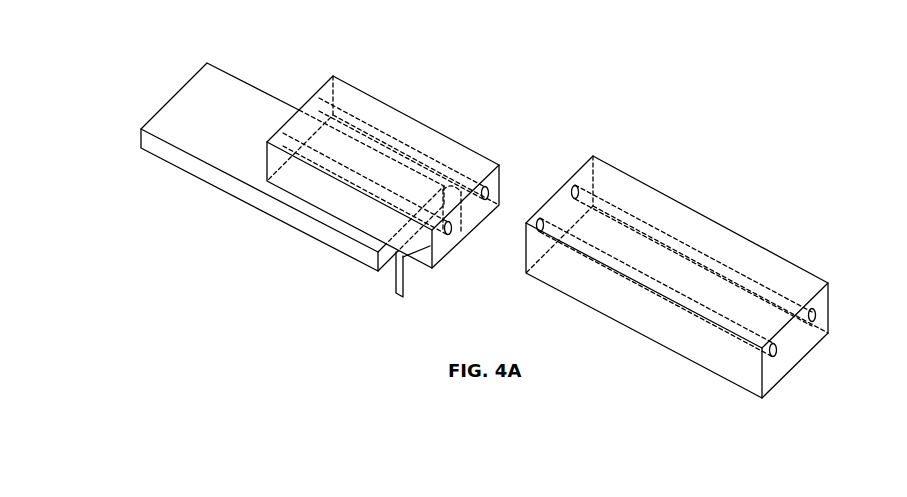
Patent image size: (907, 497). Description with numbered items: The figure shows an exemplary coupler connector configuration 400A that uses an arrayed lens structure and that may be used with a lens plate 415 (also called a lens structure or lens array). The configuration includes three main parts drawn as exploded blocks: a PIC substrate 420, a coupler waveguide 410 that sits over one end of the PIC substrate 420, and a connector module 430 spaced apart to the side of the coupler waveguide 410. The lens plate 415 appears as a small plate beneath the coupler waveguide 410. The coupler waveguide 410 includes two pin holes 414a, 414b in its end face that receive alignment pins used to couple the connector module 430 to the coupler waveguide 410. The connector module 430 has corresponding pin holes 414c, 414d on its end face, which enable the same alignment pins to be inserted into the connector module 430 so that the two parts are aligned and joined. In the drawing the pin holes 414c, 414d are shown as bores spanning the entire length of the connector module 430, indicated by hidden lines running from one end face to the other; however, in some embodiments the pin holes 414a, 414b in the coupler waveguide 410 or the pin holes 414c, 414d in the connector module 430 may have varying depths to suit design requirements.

The coupler connector configuration 400A is at (626, 87).
The coupler waveguide 410 is at (338, 78).
The pin hole 414a is at (451, 236).
The pin hole 414b is at (490, 190).
The pin hole 414c is at (771, 351).
The pin hole 414d is at (816, 312).
The lens plate 415 is at (395, 286).
The PIC substrate 420 is at (168, 102).
The connector module 430 is at (630, 176).